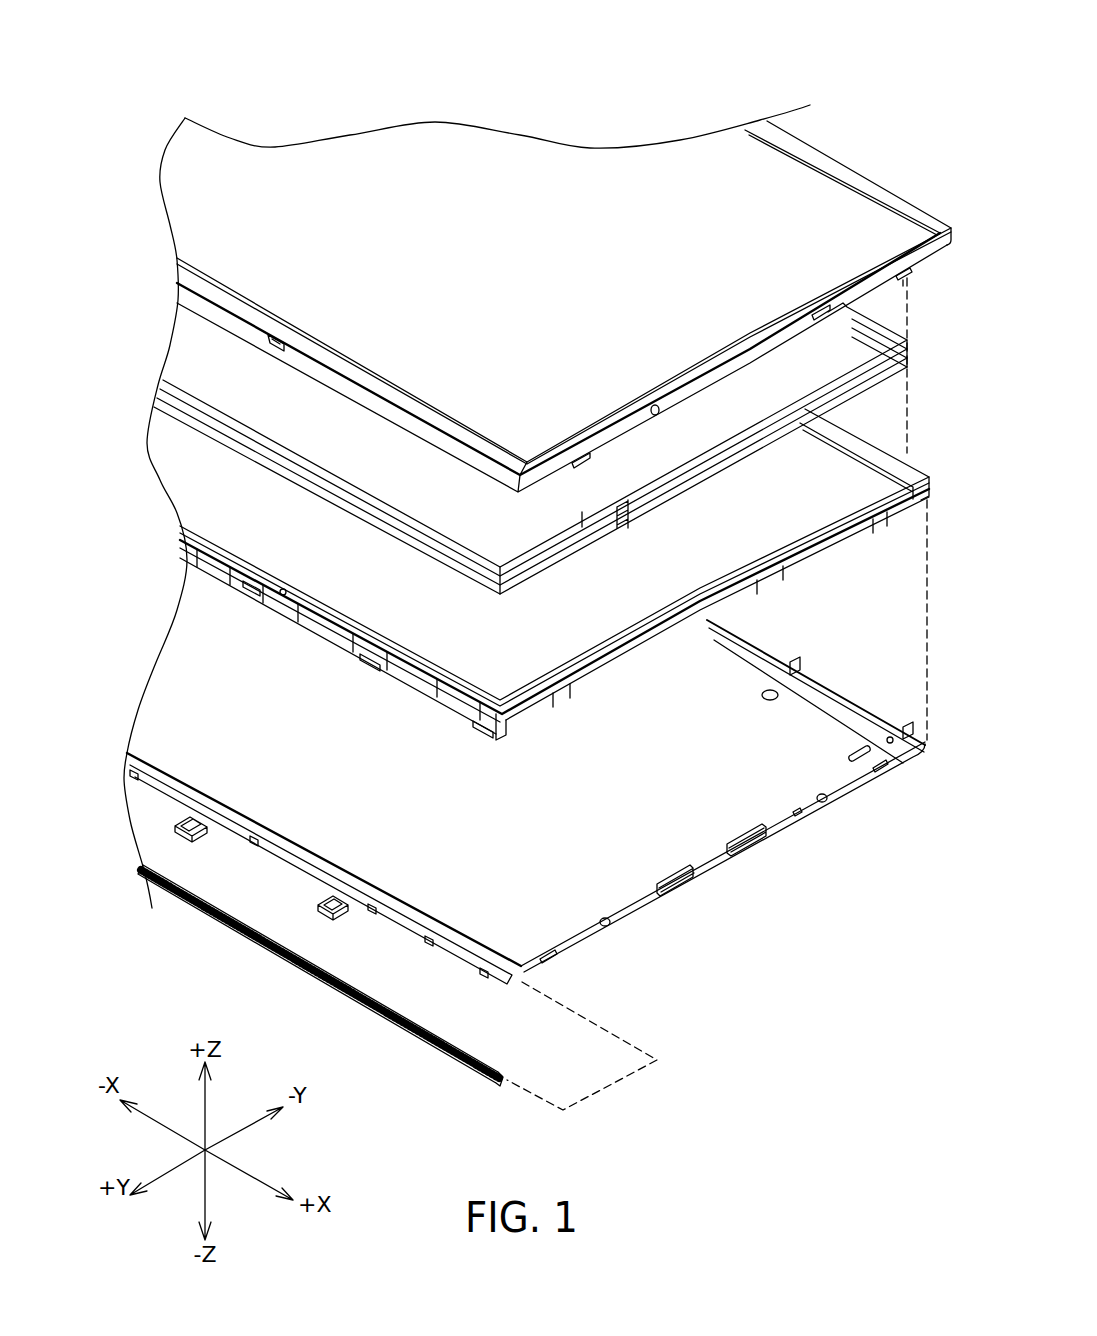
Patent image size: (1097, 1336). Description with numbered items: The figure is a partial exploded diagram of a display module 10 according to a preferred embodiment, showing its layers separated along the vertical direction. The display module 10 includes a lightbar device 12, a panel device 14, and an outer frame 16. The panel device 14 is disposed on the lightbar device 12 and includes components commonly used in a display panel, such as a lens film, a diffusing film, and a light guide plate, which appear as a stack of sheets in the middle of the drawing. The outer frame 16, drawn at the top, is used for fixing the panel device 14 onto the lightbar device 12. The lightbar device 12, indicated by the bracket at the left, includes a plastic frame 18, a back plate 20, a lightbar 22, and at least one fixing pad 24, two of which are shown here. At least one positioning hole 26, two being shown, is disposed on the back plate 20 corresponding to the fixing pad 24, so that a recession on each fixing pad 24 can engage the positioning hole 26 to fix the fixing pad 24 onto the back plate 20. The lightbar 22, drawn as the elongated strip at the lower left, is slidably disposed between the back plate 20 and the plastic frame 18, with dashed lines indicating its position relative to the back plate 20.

The display module 10 is at (714, 46).
The lightbar device 12 is at (122, 970).
The panel device 14 is at (183, 393).
The outer frame 16 is at (183, 272).
The plastic frame 18 is at (194, 555).
The back plate 20 is at (128, 760).
The lightbar 22 is at (238, 920).
The fixing pad 24 is at (176, 823).
The positioning hole 26 is at (316, 890).